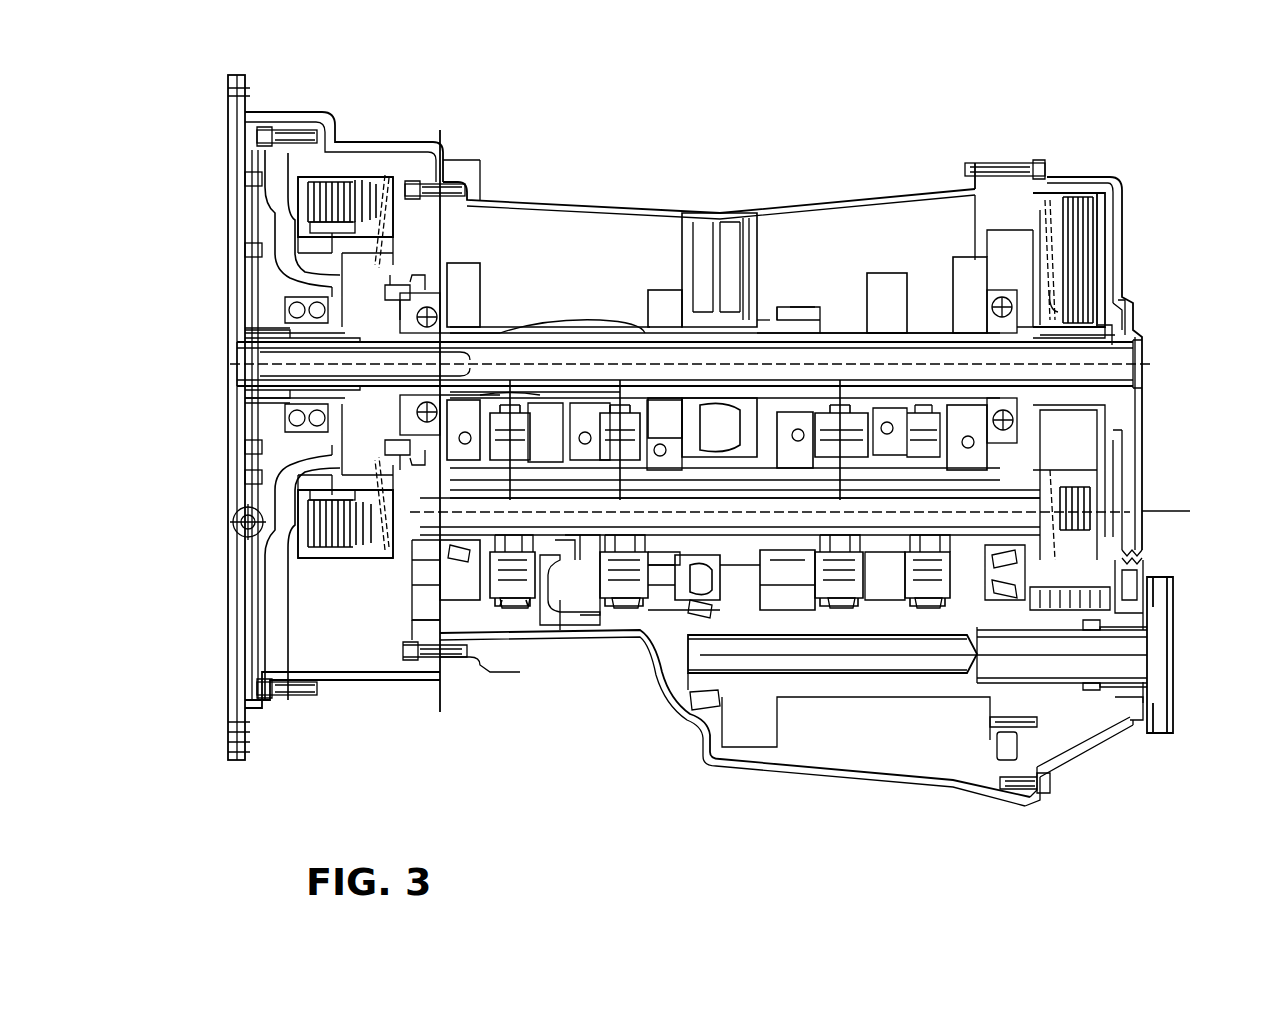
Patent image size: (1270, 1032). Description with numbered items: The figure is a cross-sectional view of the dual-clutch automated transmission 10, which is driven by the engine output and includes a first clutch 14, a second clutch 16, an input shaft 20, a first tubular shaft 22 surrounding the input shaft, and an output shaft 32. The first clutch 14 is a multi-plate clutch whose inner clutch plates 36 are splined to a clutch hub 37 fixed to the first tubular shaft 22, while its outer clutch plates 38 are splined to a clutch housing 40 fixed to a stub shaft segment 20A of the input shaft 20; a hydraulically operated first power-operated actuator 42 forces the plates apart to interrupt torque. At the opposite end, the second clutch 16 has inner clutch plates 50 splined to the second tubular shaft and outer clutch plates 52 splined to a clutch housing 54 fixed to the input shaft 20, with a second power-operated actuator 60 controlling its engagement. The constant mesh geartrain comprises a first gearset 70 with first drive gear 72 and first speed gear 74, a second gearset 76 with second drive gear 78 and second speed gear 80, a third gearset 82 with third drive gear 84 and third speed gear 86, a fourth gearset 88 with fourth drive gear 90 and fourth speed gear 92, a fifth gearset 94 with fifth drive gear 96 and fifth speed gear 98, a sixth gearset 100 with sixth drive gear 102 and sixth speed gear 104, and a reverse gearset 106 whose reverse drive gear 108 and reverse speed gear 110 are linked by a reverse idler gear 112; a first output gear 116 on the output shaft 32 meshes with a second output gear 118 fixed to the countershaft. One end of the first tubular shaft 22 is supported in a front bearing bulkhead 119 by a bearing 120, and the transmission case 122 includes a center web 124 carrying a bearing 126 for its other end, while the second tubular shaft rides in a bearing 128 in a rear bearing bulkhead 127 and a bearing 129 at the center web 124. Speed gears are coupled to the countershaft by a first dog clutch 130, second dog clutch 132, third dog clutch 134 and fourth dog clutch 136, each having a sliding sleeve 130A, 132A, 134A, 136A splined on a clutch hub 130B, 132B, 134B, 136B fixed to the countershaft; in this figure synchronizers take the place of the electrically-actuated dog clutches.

The transmission 10 is at (1155, 102).
The first clutch 14 is at (310, 160).
The second clutch 16 is at (1090, 160).
The input shaft 20 is at (280, 347).
The stub shaft segment 20A is at (290, 397).
The first tubular shaft 22 is at (280, 372).
The output shaft 32 is at (1047, 667).
The inner clutch plates 36 is at (350, 185).
The clutch hub 37 is at (345, 462).
The outer clutch plates 38 is at (318, 185).
The clutch housing 40 is at (298, 247).
The first power-operated actuator 42 is at (396, 270).
The inner clutch plates 50 is at (1103, 312).
The outer clutch plates 52 is at (1085, 205).
The clutch housing 54 is at (1100, 225).
The second power-operated actuator 60 is at (1005, 278).
The first gearset 70 is at (588, 650).
The first drive gear 72 is at (585, 335).
The first speed gear 74 is at (605, 555).
The second gearset 76 is at (781, 232).
The second drive gear 78 is at (790, 300).
The second speed gear 80 is at (810, 555).
The third gearset 82 is at (660, 278).
The third drive gear 84 is at (655, 310).
The third speed gear 86 is at (690, 570).
The fourth gearset 88 is at (884, 215).
The fourth drive gear 90 is at (875, 305).
The fourth speed gear 92 is at (882, 562).
The fifth gearset 94 is at (462, 228).
The fifth drive gear 96 is at (472, 290).
The fifth speed gear 98 is at (470, 545).
The sixth gearset 100 is at (957, 250).
The sixth drive gear 102 is at (960, 275).
The sixth speed gear 104 is at (1000, 578).
The reverse gearset 106 is at (548, 650).
The reverse drive gear 108 is at (563, 323).
The reverse speed gear 110 is at (565, 630).
The reverse idler gear 112 is at (530, 390).
The first output gear 116 is at (742, 740).
The second output gear 118 is at (800, 405).
The front bearing bulkhead 119 is at (425, 617).
The bearing 120 is at (440, 310).
The transmission case 122 is at (578, 207).
The center web 124 is at (712, 262).
The bearing 126 is at (700, 260).
The rear bearing bulkhead 127 is at (1033, 795).
The bearing 128 is at (1060, 315).
The bearing 129 is at (735, 262).
The first dog clutch 130 is at (618, 615).
The sliding sleeve 130A is at (650, 605).
The clutch hub 130B is at (700, 560).
The second dog clutch 132 is at (837, 617).
The sliding sleeve 132A is at (850, 600).
The clutch hub 132B is at (830, 550).
The third dog clutch 134 is at (512, 615).
The sliding sleeve 134A is at (510, 605).
The clutch hub 134B is at (500, 540).
The fourth dog clutch 136 is at (928, 617).
The sliding sleeve 136A is at (945, 605).
The clutch hub 136B is at (930, 545).